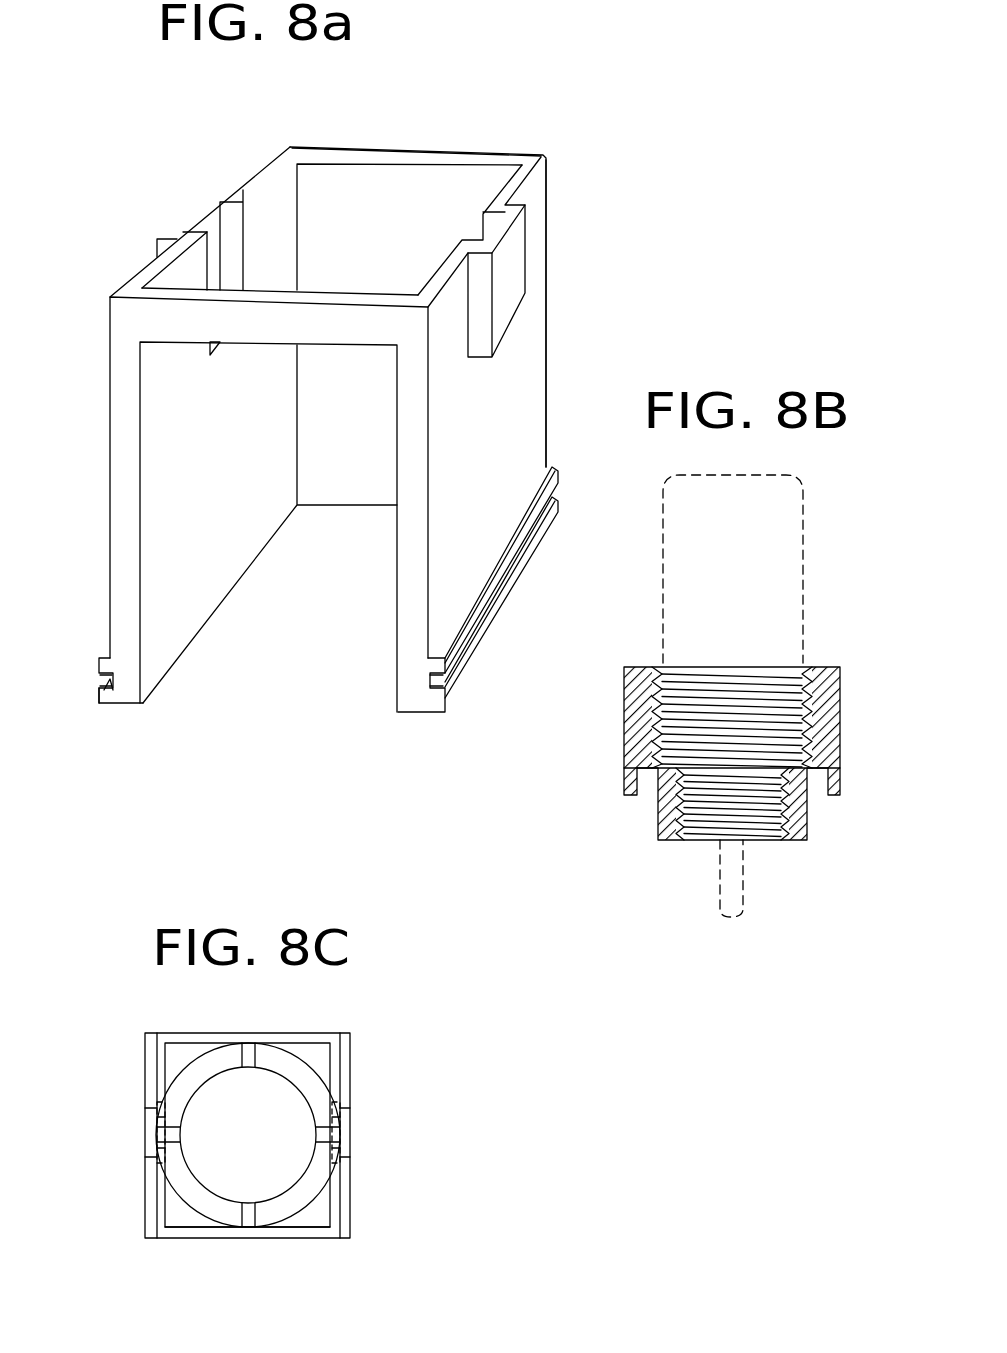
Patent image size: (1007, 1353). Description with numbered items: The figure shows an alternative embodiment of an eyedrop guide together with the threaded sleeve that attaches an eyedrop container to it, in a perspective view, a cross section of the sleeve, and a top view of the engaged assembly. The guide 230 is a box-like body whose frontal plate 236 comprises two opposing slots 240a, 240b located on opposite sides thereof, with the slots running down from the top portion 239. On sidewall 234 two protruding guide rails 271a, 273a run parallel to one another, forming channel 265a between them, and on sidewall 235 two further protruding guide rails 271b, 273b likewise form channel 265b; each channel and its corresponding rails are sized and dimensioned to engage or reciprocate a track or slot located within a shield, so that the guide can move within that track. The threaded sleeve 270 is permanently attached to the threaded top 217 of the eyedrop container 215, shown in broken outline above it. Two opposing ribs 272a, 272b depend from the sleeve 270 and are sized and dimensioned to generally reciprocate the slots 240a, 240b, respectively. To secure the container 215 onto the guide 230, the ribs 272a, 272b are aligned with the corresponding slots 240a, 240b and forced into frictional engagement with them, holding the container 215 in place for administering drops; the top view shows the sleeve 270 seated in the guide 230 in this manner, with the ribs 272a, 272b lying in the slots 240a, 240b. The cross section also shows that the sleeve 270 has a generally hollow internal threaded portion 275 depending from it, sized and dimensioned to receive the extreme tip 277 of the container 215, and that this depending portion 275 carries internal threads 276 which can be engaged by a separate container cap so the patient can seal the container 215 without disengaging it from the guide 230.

In FIG. 8a, the eyedrop guide 230 is at (142, 176).
In FIG. 8C, the eyedrop guide 230 is at (184, 1028).
In FIG. 8a, the slot 240b is at (232, 217).
In FIG. 8C, the slot 240b is at (158, 1112).
In FIG. 8a, the frontal plate 236 is at (540, 152).
In FIG. 8C, the frontal plate 236 is at (335, 1205).
In FIG. 8a, the top portion 239 is at (390, 231).
In FIG. 8a, the slot 240a is at (497, 221).
In FIG. 8C, the slot 240a is at (332, 1112).
In FIG. 8a, the sidewall 235 is at (232, 463).
In FIG. 8a, the sidewall 234 is at (505, 447).
In FIG. 8a, the guide rail 273b is at (101, 665).
In FIG. 8a, the guide rail 271b is at (100, 689).
In FIG. 8a, the channel 265b is at (110, 690).
In FIG. 8a, the guide rail 273a is at (437, 674).
In FIG. 8a, the channel 265a is at (424, 691).
In FIG. 8a, the guide rail 271a is at (450, 714).
In FIG. 8B, the eyedrop container 215 is at (797, 543).
In FIG. 8B, the threaded top 217 is at (729, 683).
In FIG. 8B, the threaded sleeve 270 is at (840, 714).
In FIG. 8C, the threaded sleeve 270 is at (300, 1203).
In FIG. 8B, the rib 272b is at (633, 797).
In FIG. 8C, the rib 272b is at (158, 1135).
In FIG. 8B, the rib 272a is at (833, 797).
In FIG. 8C, the rib 272a is at (340, 1137).
In FIG. 8B, the internal threaded portion 275 is at (657, 823).
In FIG. 8B, the internal threads 276 is at (693, 828).
In FIG. 8B, the extreme tip 277 is at (745, 901).